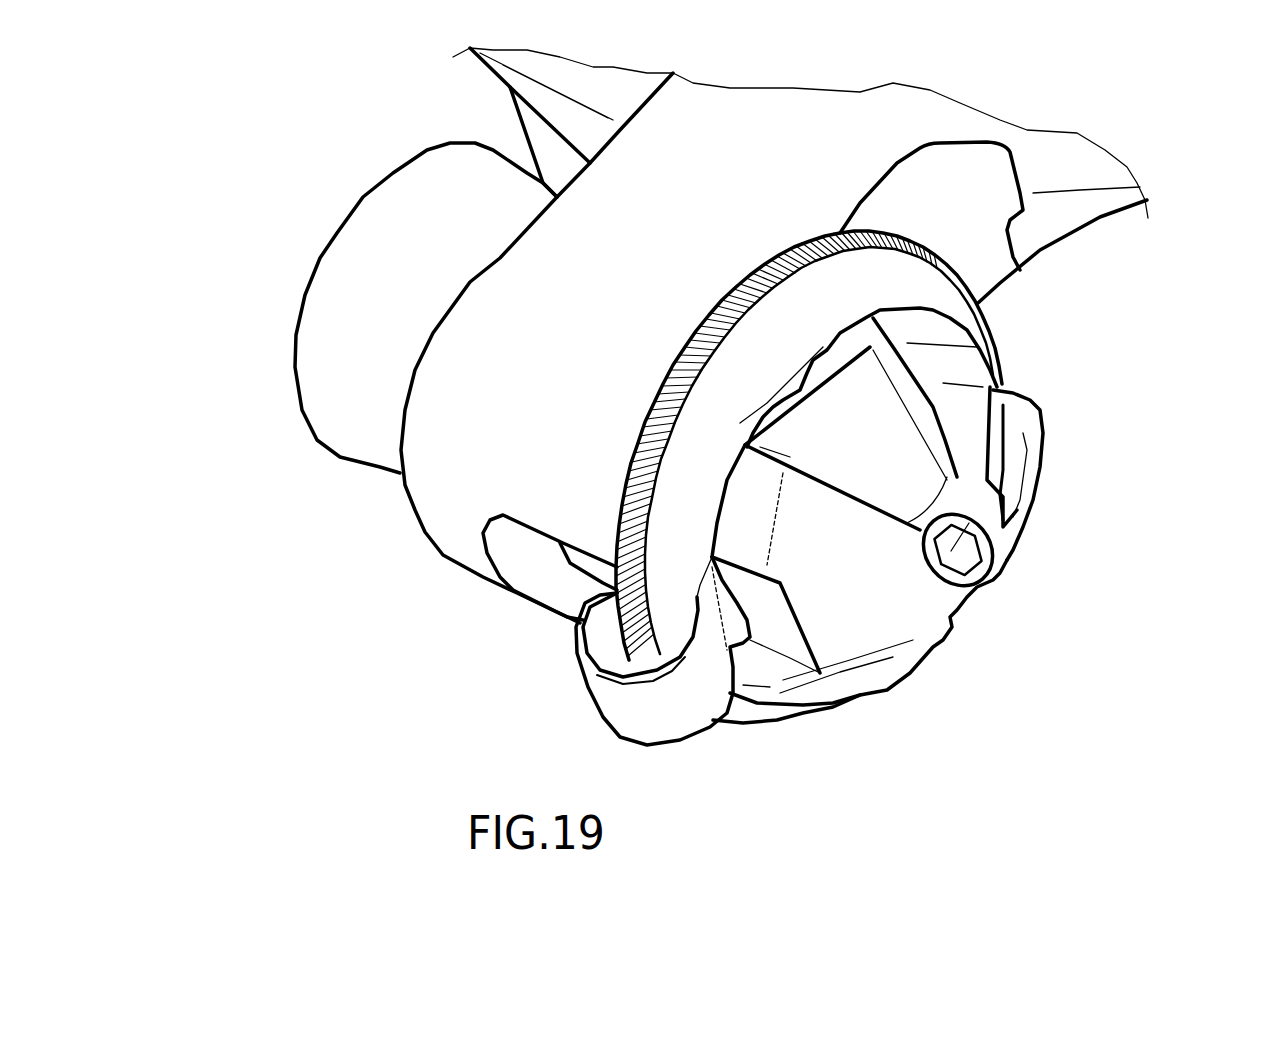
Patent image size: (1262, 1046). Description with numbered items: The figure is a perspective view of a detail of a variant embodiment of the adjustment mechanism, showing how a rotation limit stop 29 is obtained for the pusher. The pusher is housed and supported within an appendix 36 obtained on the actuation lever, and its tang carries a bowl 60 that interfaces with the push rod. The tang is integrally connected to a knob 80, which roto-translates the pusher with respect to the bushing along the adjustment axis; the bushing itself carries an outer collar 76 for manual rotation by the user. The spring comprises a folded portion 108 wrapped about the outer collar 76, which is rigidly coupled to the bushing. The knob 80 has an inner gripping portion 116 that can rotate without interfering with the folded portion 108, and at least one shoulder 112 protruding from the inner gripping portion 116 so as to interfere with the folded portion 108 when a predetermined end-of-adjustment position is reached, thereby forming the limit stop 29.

The limit stop 29 is at (780, 423).
The appendix 36 is at (453, 483).
The bowl 60 is at (350, 277).
The outer collar 76 is at (923, 283).
The knob 80 is at (897, 603).
The folded portion 108 is at (650, 713).
The shoulder 112 is at (1023, 433).
The inner gripping portion 116 is at (997, 382).